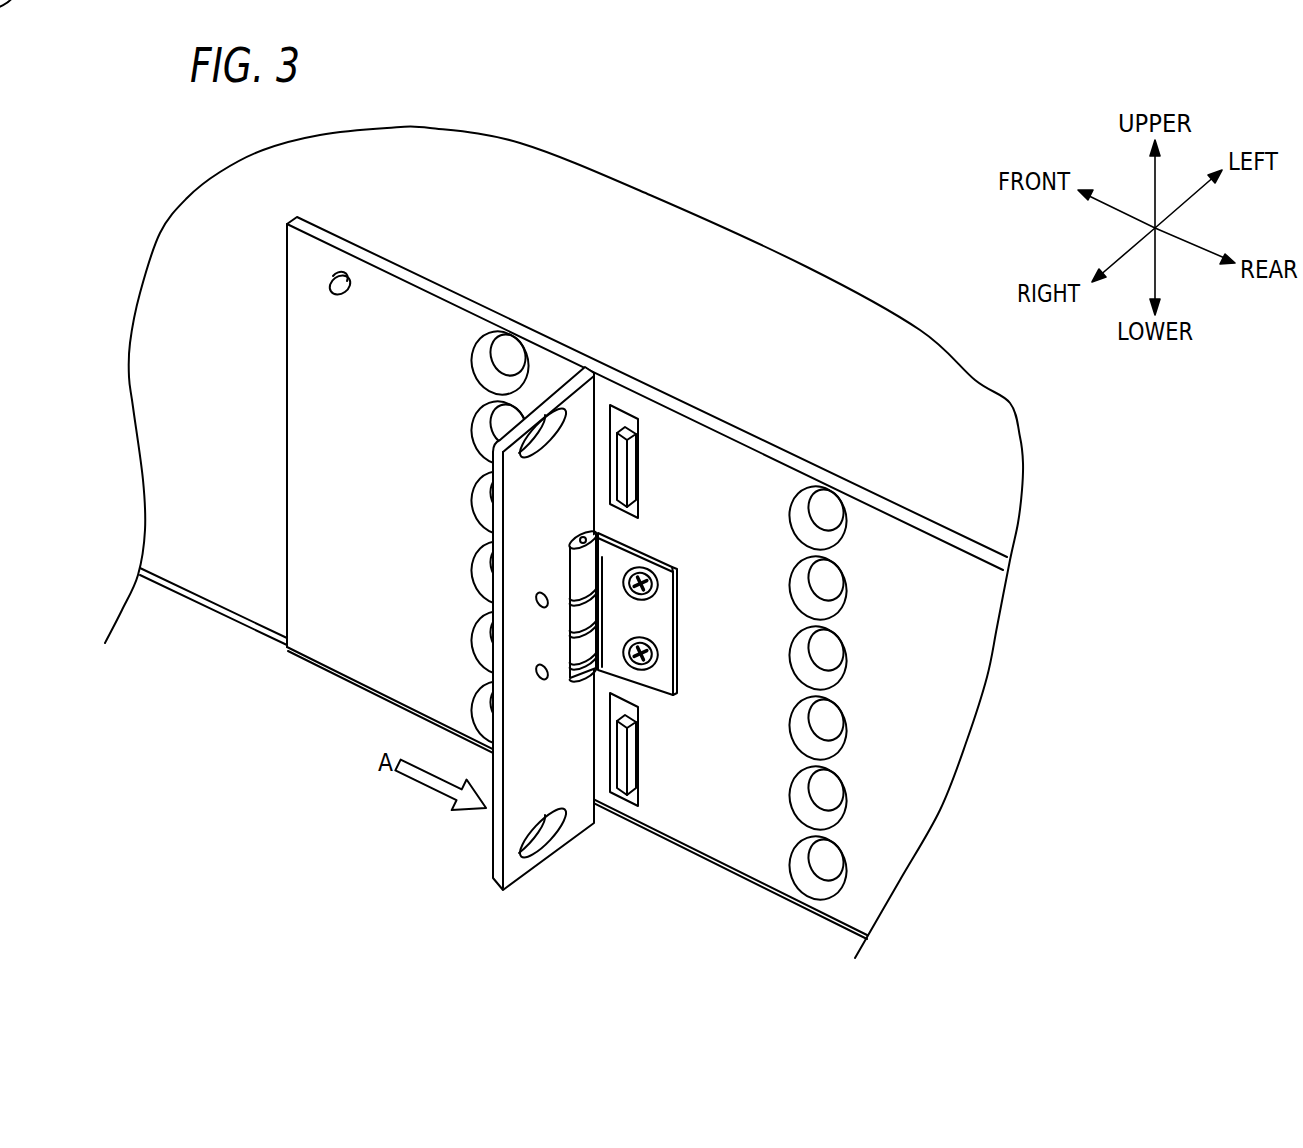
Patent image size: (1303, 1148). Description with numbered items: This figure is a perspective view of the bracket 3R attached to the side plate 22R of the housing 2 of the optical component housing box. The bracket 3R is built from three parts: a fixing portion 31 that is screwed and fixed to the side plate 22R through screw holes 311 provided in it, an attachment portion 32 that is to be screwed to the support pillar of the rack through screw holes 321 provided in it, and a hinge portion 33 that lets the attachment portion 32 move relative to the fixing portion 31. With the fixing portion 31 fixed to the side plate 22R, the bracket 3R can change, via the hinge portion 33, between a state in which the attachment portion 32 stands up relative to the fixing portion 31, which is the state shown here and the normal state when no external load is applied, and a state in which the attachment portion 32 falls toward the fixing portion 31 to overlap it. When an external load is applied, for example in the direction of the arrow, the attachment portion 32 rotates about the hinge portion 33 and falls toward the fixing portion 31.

The housing 2 is at (792, 305).
The side plate 22R is at (338, 664).
The bracket 3R is at (380, 474).
The attachment portion 32 is at (557, 760).
The screw holes 321 is at (550, 412).
The hinge portion 33 is at (623, 553).
The fixing portion 31 is at (660, 622).
The screw holes 311 is at (652, 578).